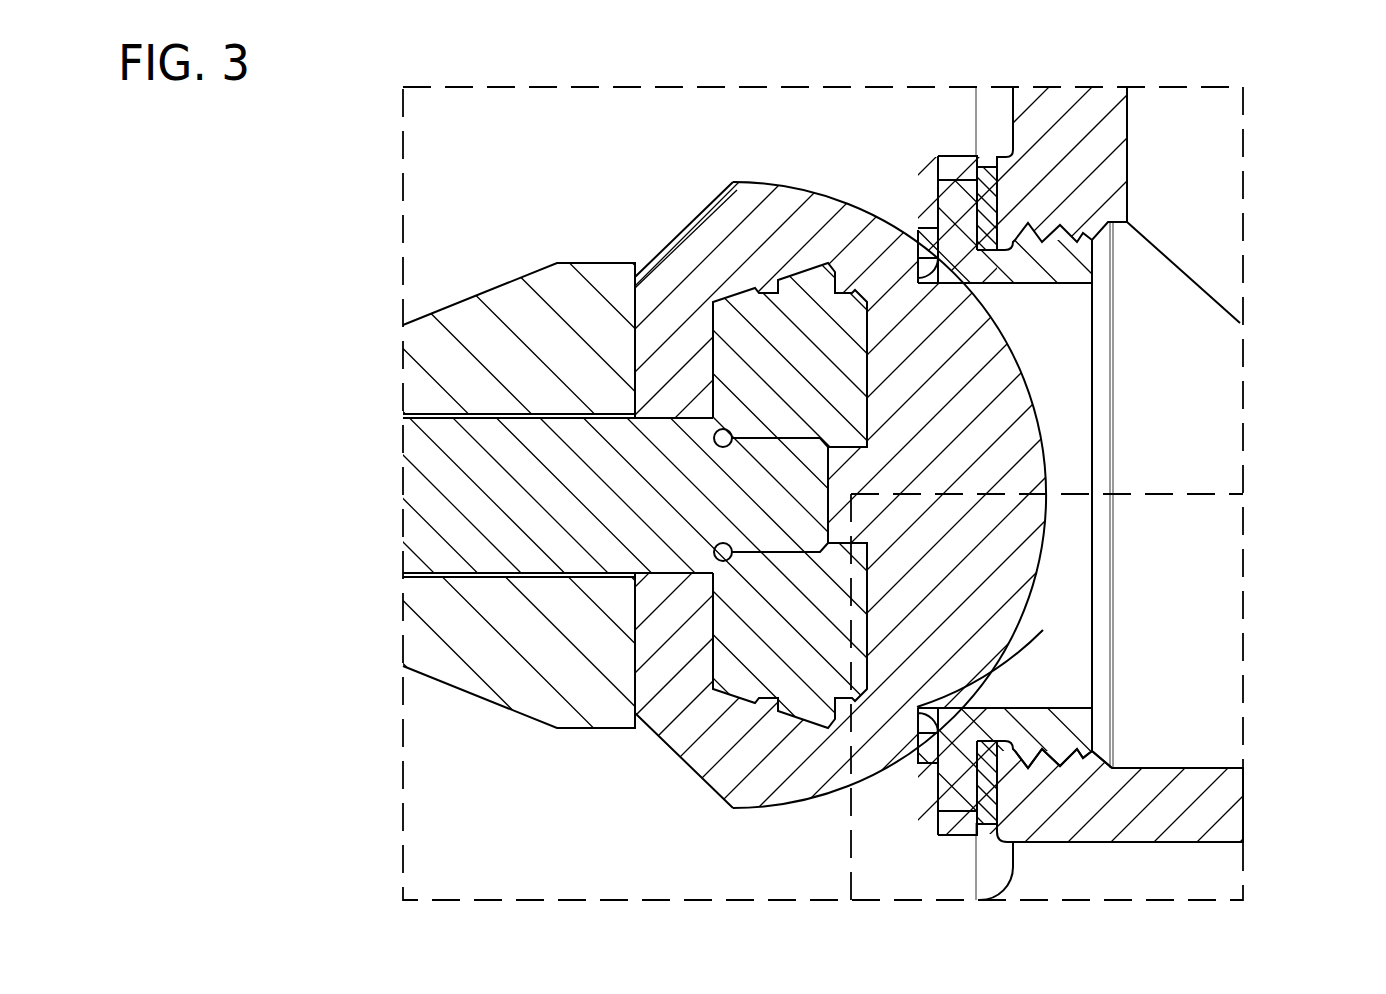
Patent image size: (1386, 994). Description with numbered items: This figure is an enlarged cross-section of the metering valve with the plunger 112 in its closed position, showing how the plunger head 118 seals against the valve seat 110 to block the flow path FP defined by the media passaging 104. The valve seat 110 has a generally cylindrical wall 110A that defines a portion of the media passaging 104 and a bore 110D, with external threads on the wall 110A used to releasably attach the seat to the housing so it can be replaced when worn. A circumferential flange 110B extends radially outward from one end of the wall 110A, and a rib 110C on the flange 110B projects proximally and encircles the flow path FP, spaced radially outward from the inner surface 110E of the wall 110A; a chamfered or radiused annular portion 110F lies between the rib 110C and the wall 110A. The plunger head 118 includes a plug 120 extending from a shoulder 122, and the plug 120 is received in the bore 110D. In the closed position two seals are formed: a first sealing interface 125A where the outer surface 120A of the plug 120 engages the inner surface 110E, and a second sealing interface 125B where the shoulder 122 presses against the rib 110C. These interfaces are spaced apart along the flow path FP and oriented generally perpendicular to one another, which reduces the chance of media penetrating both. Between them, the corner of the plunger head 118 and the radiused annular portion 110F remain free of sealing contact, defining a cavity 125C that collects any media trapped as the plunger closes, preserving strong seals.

The media passaging 104 is at (1210, 566).
The valve seat 110 is at (1102, 359).
The cylindrical wall 110A is at (1072, 733).
The circumferential flange 110B is at (947, 203).
The rib 110C is at (927, 750).
The bore 110D is at (1046, 680).
The inner surface 110E is at (1052, 285).
The radiused annular portion 110F is at (985, 170).
The plunger 112 is at (466, 283).
The plunger head 118 is at (750, 195).
The plug 120 is at (1033, 423).
The outer surface 120A is at (918, 708).
The shoulder 122 is at (933, 240).
The first sealing interface 125A is at (964, 292).
The second sealing interface 125B is at (913, 739).
The cavity 125C is at (923, 716).
The flow path FP is at (1183, 495).